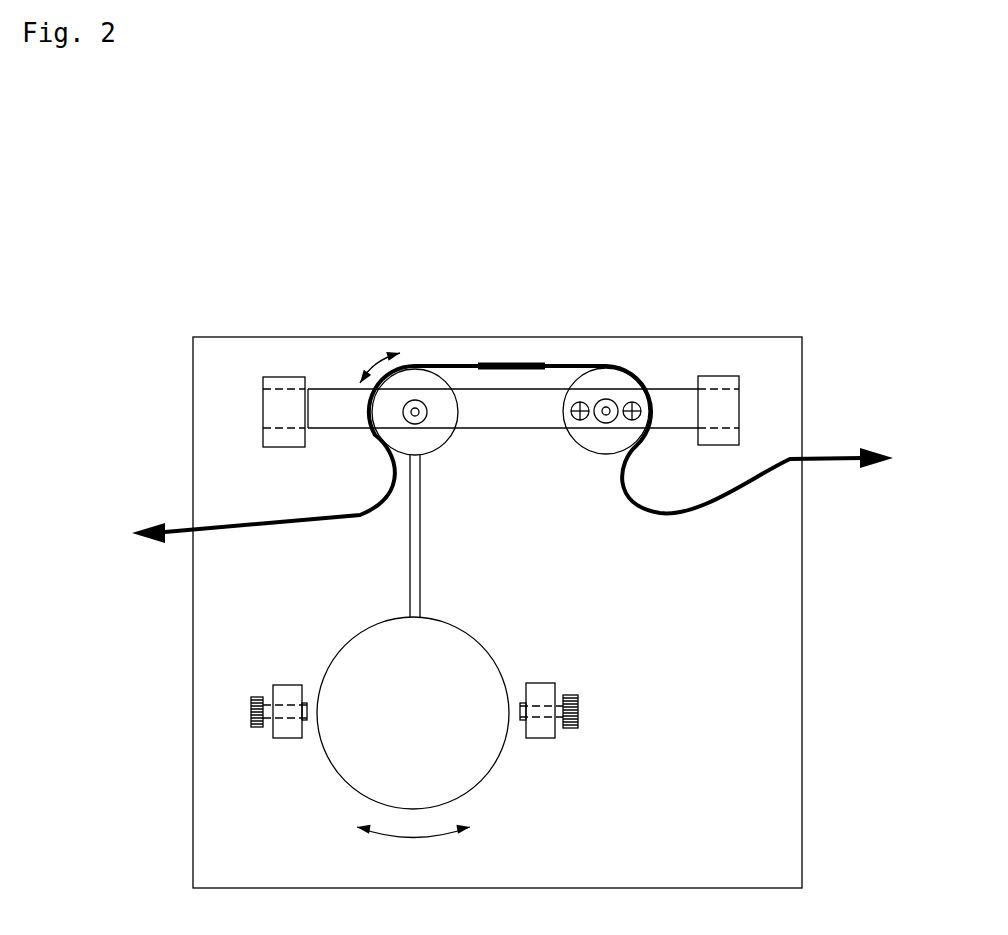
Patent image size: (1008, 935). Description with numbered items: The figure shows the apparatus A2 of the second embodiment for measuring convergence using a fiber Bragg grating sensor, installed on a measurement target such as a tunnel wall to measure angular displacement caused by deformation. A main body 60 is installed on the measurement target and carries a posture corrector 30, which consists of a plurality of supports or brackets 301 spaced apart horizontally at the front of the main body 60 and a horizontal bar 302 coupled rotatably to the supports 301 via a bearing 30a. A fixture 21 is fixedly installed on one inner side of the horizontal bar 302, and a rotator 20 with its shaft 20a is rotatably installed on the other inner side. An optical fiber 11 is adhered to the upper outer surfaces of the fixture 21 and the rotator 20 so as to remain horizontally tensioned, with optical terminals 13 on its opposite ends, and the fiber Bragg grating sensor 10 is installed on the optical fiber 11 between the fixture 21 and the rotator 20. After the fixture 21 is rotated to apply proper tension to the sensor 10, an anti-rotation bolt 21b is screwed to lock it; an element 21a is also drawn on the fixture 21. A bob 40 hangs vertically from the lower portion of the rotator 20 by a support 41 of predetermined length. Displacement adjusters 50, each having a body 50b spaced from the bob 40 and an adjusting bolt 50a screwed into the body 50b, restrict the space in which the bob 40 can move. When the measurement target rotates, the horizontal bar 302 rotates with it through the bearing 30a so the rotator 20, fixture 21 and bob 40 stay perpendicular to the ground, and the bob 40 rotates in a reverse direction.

The apparatus for measuring convergence A2 is at (548, 505).
The fiber Bragg grating sensor 10 is at (505, 365).
The optical fiber 11 is at (642, 507).
The optical terminal 13 is at (877, 470).
The rotator 20 is at (448, 378).
The shaft 20a is at (425, 417).
The fixture 21 is at (597, 442).
The pulley center shaft 21a is at (600, 399).
The anti-rotation bolt 21b is at (643, 402).
The posture corrector 30 is at (337, 387).
The bearing 30a is at (267, 391).
The support 301 is at (727, 378).
The horizontal bar 302 is at (325, 397).
The bob 40 is at (450, 665).
The support 41 is at (407, 563).
The displacement adjuster 50 is at (461, 761).
The adjusting bolt 50a is at (580, 707).
The body 50b is at (545, 740).
The main body 60 is at (802, 652).